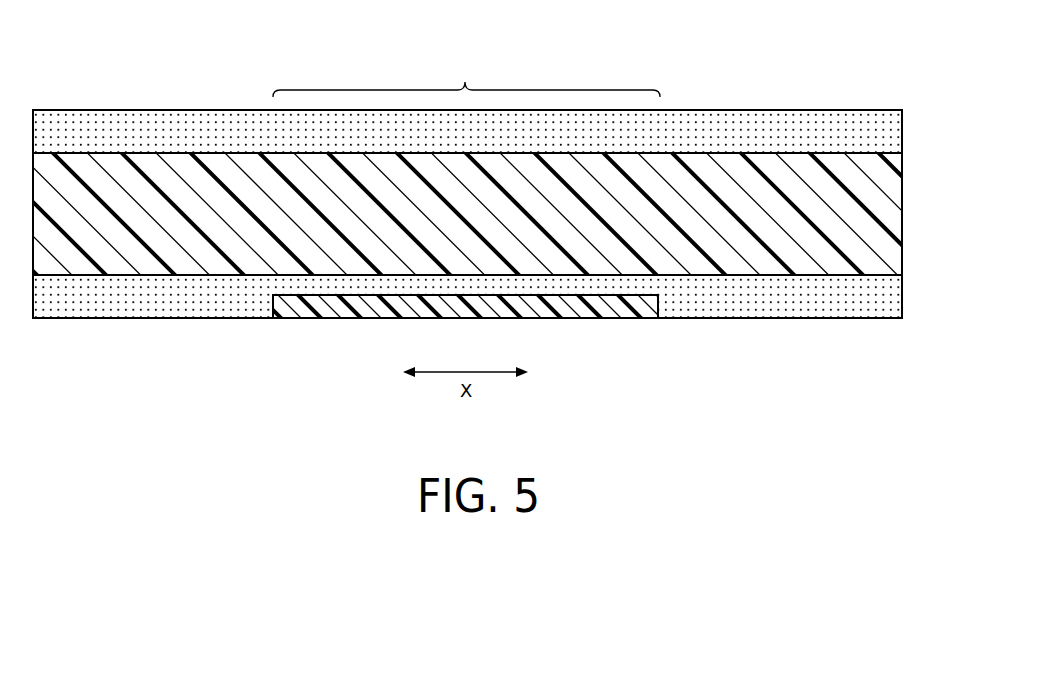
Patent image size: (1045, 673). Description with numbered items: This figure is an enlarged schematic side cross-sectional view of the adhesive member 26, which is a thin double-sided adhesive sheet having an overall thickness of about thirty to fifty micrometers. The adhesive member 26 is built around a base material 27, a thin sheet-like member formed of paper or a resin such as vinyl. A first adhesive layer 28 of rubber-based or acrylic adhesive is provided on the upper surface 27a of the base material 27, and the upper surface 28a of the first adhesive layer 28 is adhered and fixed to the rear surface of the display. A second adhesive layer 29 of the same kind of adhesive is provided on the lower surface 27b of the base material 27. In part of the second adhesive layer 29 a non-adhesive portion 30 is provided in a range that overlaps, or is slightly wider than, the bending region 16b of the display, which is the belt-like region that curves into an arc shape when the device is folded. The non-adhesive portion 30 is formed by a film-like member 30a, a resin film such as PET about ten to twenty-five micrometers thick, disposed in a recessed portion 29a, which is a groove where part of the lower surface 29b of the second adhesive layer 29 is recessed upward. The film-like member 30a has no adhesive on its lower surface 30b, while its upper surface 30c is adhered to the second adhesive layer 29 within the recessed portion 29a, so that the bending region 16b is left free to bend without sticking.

The adhesive member 26 is at (75, 33).
The base material 27 is at (888, 213).
The upper surface of the base material 27a is at (145, 152).
The lower surface of the base material 27b is at (154, 277).
The first adhesive layer 28 is at (887, 136).
The upper surface of the first adhesive layer 28a is at (770, 110).
The second adhesive layer 29 is at (887, 296).
The recessed portion 29a is at (435, 300).
The lower surface of the second adhesive layer 29b is at (755, 318).
The non-adhesive portion 30 is at (620, 330).
The film-like member 30a is at (573, 310).
The lower surface of the film-like member 30b is at (343, 319).
The upper surface of the film-like member 30c is at (284, 290).
The bending region 16b is at (466, 74).